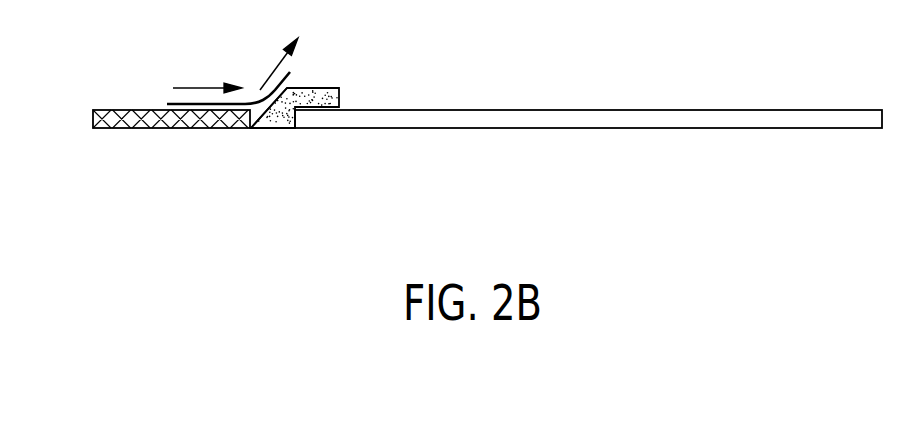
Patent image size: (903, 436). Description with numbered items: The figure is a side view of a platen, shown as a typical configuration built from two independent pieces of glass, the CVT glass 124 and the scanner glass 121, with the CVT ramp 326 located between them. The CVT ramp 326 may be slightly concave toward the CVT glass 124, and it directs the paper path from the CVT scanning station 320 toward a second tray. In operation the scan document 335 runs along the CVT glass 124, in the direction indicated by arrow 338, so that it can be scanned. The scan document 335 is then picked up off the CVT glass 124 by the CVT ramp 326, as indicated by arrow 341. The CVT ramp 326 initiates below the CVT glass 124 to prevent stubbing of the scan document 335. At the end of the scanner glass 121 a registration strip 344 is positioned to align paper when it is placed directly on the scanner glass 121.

The scanner glass 121 is at (600, 110).
The CVT glass 124 is at (103, 110).
The CVT scanning station 320 is at (213, 213).
The CVT ramp 326 is at (270, 128).
The scan document 335 is at (170, 100).
The arrow 338 is at (188, 87).
The arrow 341 is at (272, 68).
The registration strip 344 is at (340, 97).